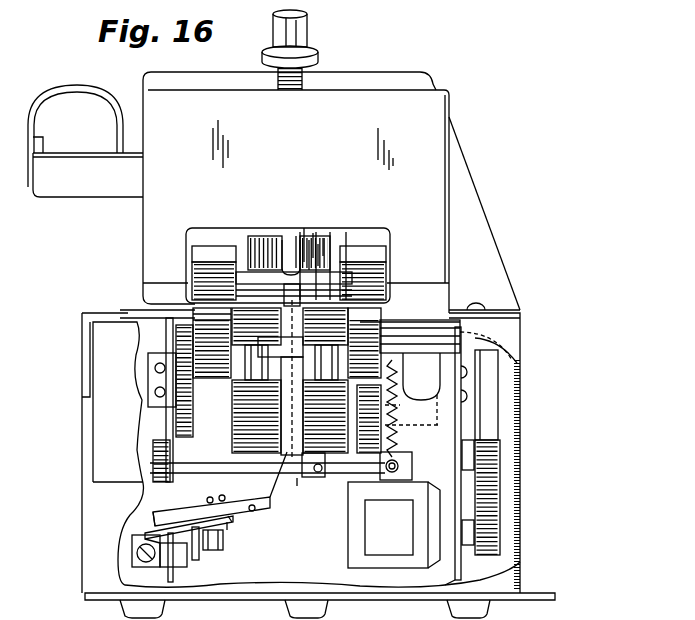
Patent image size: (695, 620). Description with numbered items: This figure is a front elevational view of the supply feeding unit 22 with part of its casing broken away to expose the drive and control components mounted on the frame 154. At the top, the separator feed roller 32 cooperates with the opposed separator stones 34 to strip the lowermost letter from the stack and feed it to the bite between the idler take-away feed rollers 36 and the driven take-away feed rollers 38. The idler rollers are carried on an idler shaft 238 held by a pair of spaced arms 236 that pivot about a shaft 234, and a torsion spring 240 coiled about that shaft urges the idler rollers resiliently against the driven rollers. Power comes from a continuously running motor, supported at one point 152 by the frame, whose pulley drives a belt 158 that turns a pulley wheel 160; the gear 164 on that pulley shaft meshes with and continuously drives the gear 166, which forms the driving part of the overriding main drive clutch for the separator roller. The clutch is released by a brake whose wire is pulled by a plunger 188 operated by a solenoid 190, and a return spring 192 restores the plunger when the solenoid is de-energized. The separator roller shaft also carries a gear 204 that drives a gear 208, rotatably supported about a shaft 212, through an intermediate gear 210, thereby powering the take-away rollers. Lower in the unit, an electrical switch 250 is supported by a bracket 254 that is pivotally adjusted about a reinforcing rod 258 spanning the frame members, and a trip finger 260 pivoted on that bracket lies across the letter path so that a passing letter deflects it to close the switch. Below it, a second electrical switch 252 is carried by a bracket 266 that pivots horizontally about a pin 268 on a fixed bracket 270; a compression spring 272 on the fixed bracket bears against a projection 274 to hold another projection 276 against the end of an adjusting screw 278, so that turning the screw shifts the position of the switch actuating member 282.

The supply unit 22 is at (510, 159).
The separator feed roller 32 is at (232, 444).
The separator stones 34 is at (205, 251).
The idler take-away feed rollers 36 is at (210, 268).
The driven take-away feed rollers 38 is at (207, 323).
The motor support 152 is at (457, 530).
The frame 154 is at (142, 494).
The belt 158 is at (487, 420).
The pulley wheel 160 is at (500, 395).
The gear 164 is at (392, 452).
The gear 166 is at (348, 452).
The plunger 188 is at (400, 457).
The solenoid 190 is at (372, 542).
The return spring 192 is at (397, 425).
The gear 204 is at (178, 442).
The gear 208 is at (170, 322).
The intermediate gear 210 is at (180, 423).
The shaft 212 is at (420, 343).
The shaft 234 is at (300, 232).
The arms 236 is at (237, 228).
The idler shaft 238 is at (252, 260).
The torsion spring 240 is at (283, 236).
The electrical switch 250 is at (282, 462).
The electrical switch 252 is at (180, 512).
The bracket 254 is at (293, 470).
The reinforcing rod 258 is at (297, 486).
The trip finger 260 is at (373, 292).
The bracket 266 is at (230, 522).
The pin 268 is at (145, 515).
The bracket 270 is at (196, 560).
The compression spring 272 is at (218, 550).
The projection 274 is at (227, 530).
The projection 276 is at (143, 535).
The adjusting screw 278 is at (137, 553).
The actuating member 282 is at (254, 511).